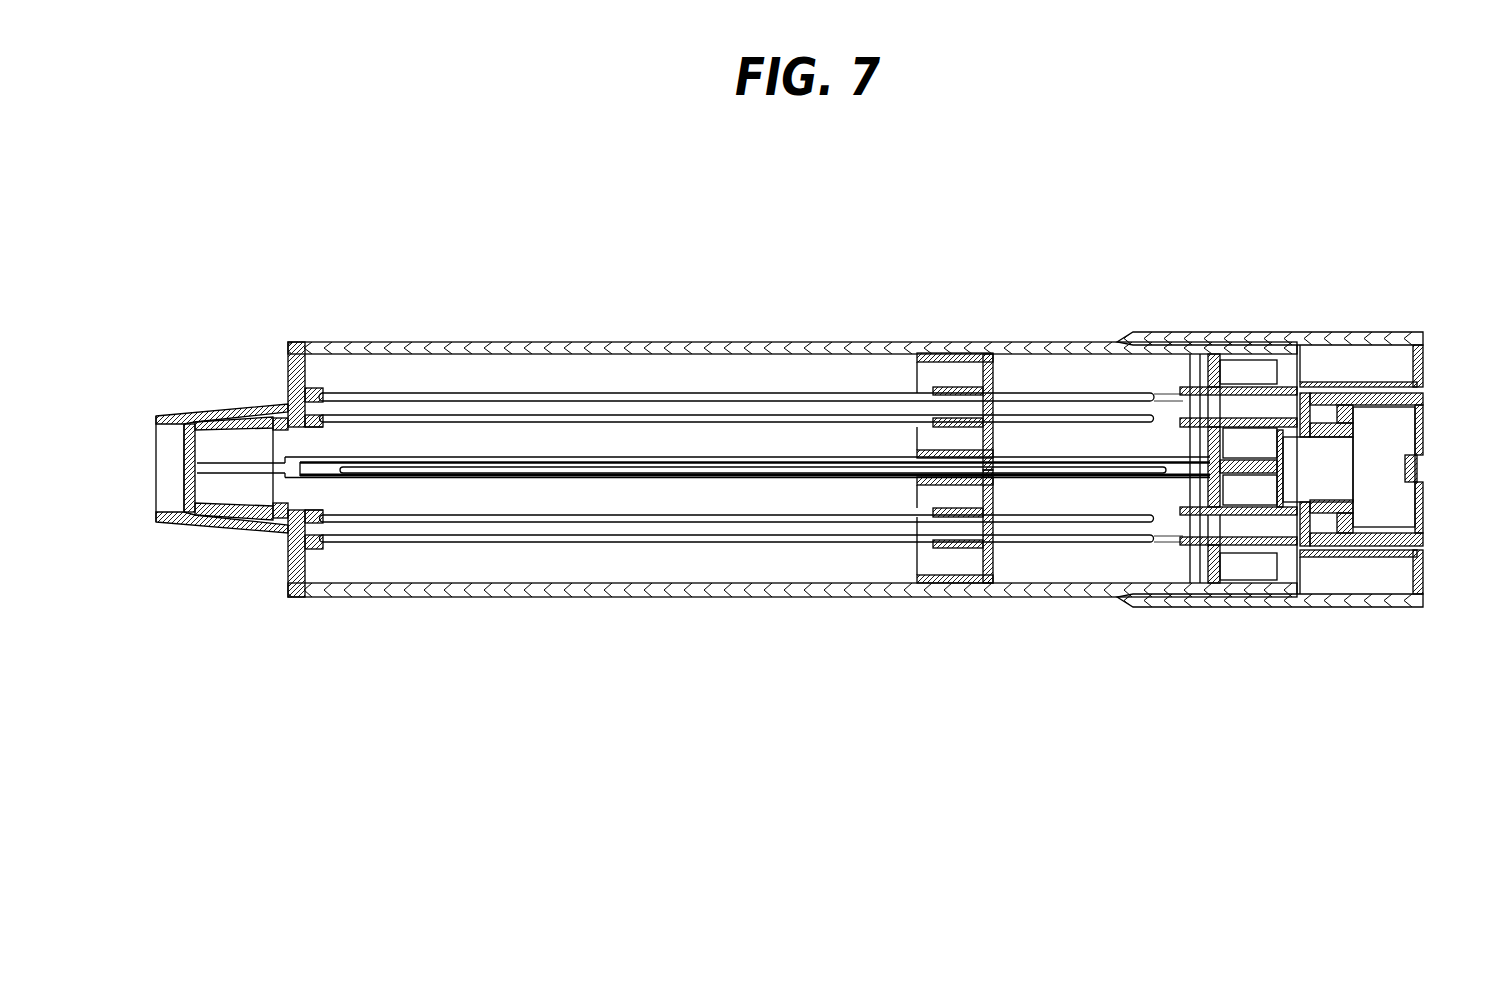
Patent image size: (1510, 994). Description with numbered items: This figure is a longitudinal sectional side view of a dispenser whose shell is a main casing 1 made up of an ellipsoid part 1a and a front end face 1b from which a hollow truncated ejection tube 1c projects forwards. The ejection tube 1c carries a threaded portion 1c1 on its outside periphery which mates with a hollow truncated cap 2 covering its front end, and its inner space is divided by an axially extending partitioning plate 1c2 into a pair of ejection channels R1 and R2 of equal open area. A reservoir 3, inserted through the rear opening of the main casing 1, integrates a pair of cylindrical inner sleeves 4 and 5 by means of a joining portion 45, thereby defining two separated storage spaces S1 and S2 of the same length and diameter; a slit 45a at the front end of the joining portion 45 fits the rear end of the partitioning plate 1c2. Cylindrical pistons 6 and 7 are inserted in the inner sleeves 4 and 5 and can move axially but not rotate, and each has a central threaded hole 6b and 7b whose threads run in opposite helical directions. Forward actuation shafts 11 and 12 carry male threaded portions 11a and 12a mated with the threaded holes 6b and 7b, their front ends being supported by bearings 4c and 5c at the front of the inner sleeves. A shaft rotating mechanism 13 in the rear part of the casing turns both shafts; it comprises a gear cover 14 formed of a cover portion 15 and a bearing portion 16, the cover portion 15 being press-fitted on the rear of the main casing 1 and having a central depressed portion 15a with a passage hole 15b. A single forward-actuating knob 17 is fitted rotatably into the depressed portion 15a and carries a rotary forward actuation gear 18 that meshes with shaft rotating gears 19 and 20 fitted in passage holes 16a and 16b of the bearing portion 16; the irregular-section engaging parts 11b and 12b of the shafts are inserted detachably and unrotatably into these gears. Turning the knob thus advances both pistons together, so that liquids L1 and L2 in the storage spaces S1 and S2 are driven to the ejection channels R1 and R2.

The main casing 1 is at (433, 335).
The ellipsoid part 1a is at (590, 342).
The front end face 1b is at (287, 372).
The ejection tube 1c is at (207, 527).
The threaded portion 1c1 is at (228, 438).
The partitioning plate 1c2 is at (197, 425).
The cap 2 is at (188, 518).
The reservoir 3 is at (778, 683).
The inner sleeve 4 is at (833, 342).
The bearing 4c is at (320, 368).
The inner sleeve 5 is at (770, 590).
The bearing 5c is at (317, 545).
The piston 6 is at (982, 355).
The threaded hole 6b is at (968, 392).
The piston 7 is at (967, 592).
The threaded hole 7b is at (985, 550).
The forward actuation shaft 11 is at (1070, 405).
The male threaded portion 11a is at (870, 405).
The engaging part 11b is at (1222, 405).
The forward actuation shaft 12 is at (1065, 533).
The male threaded portion 12a is at (847, 530).
The engaging part 12b is at (1187, 547).
The shaft rotating mechanism 13 is at (1378, 305).
The gear cover 14 is at (1435, 675).
The cover portion 15 is at (1391, 499).
The depressed portion 15a is at (1373, 387).
The passage hole 15b is at (1305, 440).
The bearing portion 16 is at (1255, 499).
The passage hole 16a is at (1183, 395).
The passage hole 16b is at (1212, 547).
The forward-actuating knob 17 is at (1423, 497).
The rotary forward actuation gear 18 is at (1257, 447).
The shaft rotating gear 19 is at (1247, 370).
The shaft rotating gear 20 is at (1258, 567).
The joining portion 45 is at (703, 571).
The slit 45a is at (300, 468).
The liquid L1 is at (492, 385).
The liquid L2 is at (507, 578).
The storage space S1 is at (705, 365).
The storage space S2 is at (580, 563).
The ejection channel R1 is at (220, 455).
The ejection channel R2 is at (253, 487).